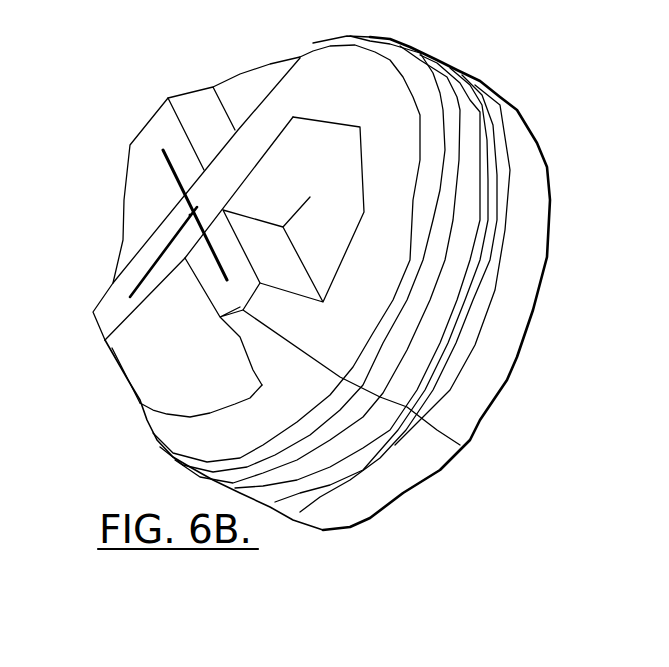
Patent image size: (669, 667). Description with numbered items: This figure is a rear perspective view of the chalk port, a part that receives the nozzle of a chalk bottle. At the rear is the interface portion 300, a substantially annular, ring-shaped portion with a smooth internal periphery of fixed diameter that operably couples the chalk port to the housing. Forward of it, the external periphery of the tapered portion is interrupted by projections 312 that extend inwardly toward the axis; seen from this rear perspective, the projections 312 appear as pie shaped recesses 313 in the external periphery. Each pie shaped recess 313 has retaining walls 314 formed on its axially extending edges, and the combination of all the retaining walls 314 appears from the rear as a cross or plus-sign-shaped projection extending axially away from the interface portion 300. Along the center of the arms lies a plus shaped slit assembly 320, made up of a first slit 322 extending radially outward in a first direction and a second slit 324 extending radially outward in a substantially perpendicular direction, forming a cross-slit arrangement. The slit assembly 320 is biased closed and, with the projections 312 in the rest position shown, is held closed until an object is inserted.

The interface portion 300 is at (507, 363).
The projections 312 is at (647, 0).
The pie shaped recesses 313 is at (240, 74).
The retaining walls 314 is at (197, 123).
The slit assembly 320 is at (187, 217).
The first slit 322 is at (163, 150).
The second slit 324 is at (197, 207).